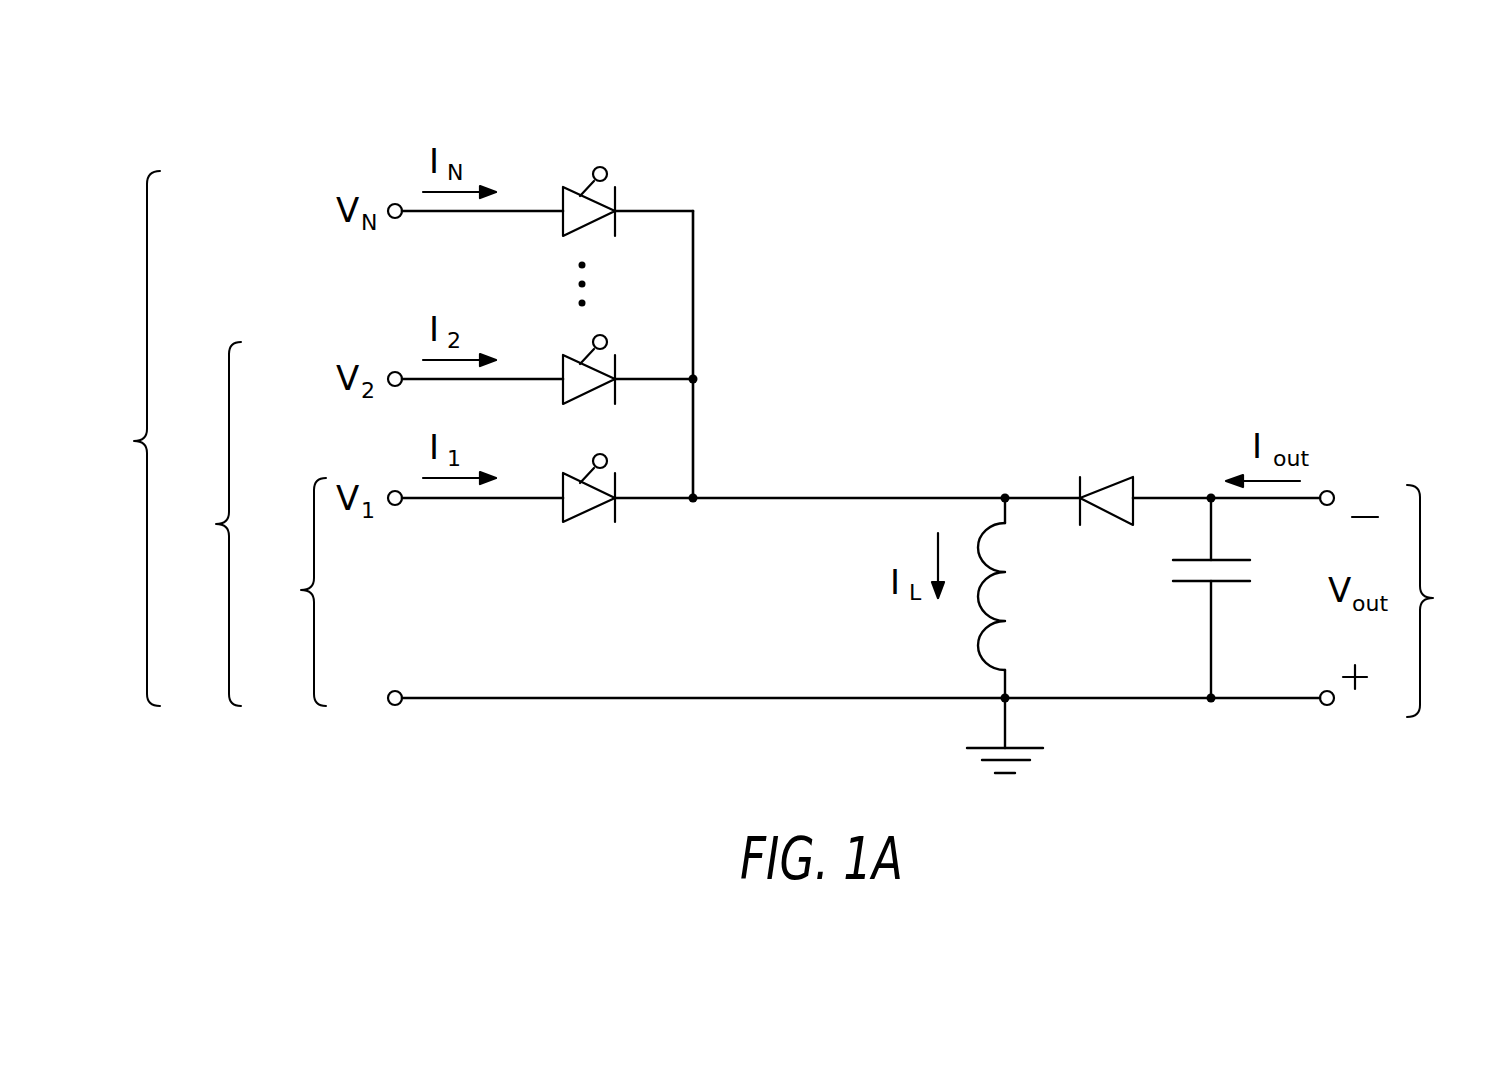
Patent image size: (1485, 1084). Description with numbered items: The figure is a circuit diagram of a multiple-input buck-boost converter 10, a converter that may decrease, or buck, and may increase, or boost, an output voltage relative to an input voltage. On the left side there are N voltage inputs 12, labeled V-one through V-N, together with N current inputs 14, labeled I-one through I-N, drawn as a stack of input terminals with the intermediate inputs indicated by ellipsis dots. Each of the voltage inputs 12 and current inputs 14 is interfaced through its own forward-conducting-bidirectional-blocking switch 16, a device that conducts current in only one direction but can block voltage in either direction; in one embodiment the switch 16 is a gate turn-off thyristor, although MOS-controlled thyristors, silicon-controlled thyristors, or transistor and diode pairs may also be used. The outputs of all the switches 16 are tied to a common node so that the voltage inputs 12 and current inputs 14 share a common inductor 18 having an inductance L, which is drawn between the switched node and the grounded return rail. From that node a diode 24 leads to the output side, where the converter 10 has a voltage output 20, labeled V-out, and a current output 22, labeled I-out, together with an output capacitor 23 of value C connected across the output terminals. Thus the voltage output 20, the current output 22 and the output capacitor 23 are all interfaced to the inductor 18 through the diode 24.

The multiple-input buck-boost converter 10 is at (1088, 240).
The voltage inputs 12 is at (213, 438).
The current inputs 14 is at (395, 203).
The forward-conducting-bidirectional-blocking switch 16 is at (607, 171).
The inductor 18 is at (1003, 521).
The voltage output 20 is at (1441, 601).
The current output 22 is at (1333, 492).
The output capacitor 23 is at (1232, 585).
The diode 24 is at (1112, 476).